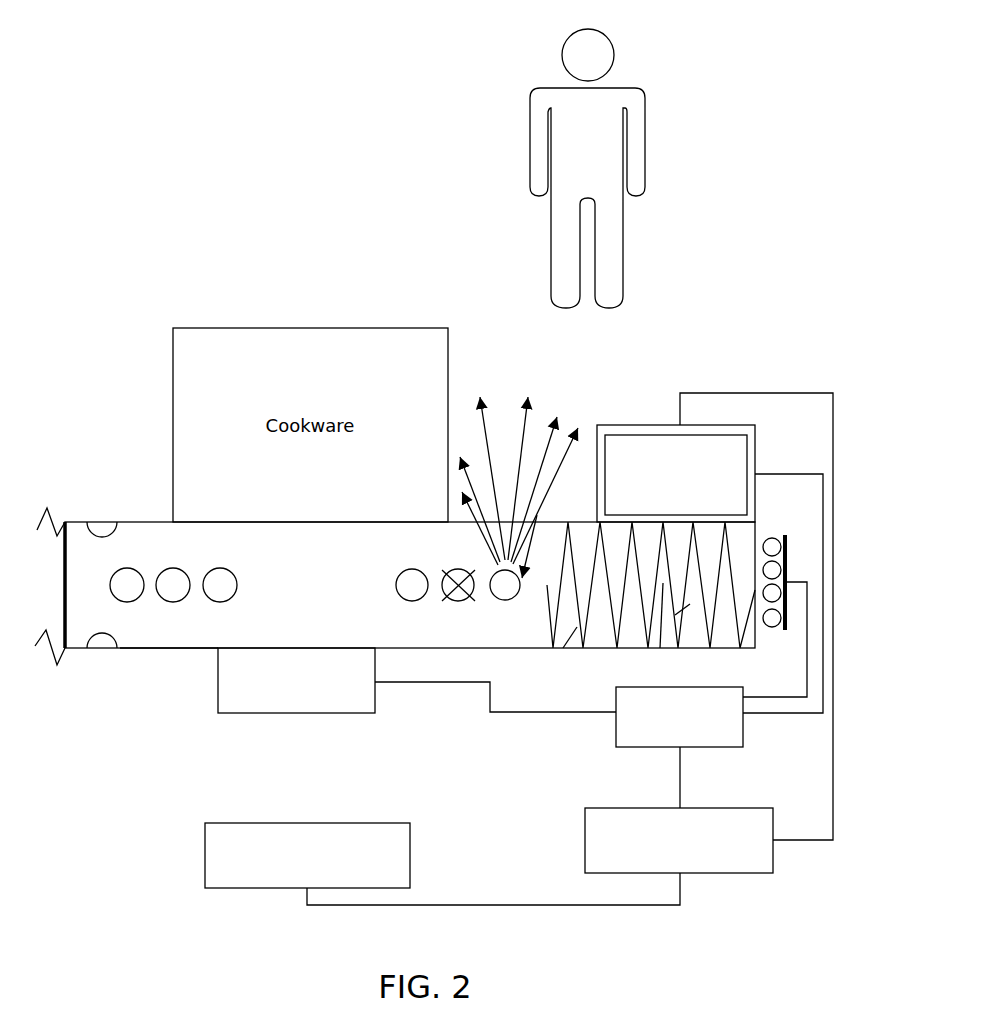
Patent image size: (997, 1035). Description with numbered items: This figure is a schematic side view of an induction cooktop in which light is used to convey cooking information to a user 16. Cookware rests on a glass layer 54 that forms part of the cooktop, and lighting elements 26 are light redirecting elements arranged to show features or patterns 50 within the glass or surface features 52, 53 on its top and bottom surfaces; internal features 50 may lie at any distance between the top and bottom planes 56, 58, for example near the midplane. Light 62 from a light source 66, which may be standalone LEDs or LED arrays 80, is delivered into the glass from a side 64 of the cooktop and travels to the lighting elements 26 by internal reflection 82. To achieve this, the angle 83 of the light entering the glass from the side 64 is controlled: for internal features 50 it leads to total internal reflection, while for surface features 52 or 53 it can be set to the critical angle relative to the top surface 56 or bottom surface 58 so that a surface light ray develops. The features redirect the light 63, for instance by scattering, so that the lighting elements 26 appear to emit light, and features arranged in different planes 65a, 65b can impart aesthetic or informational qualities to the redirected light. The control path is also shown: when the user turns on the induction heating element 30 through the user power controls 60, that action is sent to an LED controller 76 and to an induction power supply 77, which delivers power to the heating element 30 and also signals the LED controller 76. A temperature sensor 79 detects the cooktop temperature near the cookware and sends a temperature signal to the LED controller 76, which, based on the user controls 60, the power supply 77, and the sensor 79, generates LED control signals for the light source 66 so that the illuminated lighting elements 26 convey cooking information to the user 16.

The user 16 is at (613, 50).
The lighting element 26 is at (520, 598).
The induction heating element 30 is at (290, 823).
The features 50 is at (125, 568).
The top surface feature 52 is at (100, 518).
The bottom surface feature 53 is at (100, 652).
The glass layer 54 is at (193, 633).
The top plane 56 is at (78, 518).
The bottom plane 58 is at (137, 650).
The user power controls 60 is at (622, 425).
The light 62 is at (608, 620).
The redirected light 63 is at (487, 428).
The side 64 is at (800, 572).
The plane 65a is at (445, 570).
The plane 65b is at (447, 598).
The light source 66 is at (787, 572).
The LED controller 76 is at (635, 747).
The induction power supply 77 is at (585, 820).
The temperature sensor 79 is at (335, 648).
The LED array 80 is at (772, 537).
The internal reflection 82 is at (563, 648).
The angle 83 is at (660, 648).